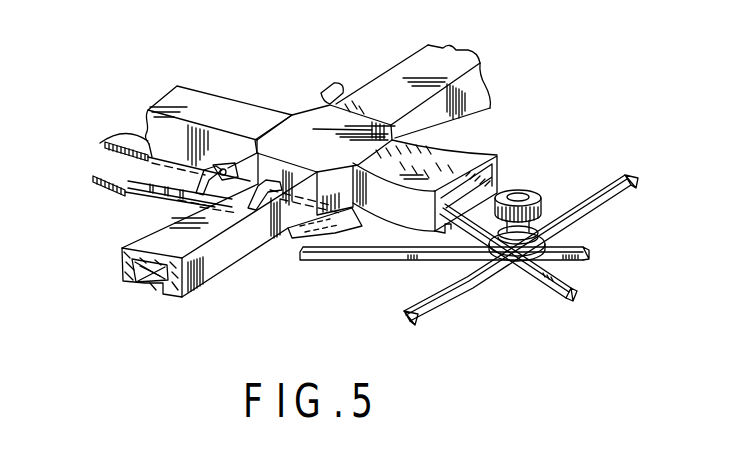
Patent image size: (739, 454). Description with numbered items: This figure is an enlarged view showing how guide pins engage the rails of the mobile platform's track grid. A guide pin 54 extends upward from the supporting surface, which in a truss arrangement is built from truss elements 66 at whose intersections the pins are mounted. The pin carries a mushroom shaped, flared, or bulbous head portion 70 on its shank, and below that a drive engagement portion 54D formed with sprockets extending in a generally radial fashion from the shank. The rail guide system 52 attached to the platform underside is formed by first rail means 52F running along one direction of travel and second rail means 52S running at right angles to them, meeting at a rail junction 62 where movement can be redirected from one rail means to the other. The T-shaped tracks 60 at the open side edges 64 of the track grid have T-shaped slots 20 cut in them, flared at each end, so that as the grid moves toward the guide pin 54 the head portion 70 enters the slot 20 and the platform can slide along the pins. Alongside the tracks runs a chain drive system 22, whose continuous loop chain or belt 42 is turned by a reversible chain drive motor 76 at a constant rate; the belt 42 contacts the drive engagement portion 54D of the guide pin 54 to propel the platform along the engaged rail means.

The T-shaped slot 20 is at (148, 285).
The chain drive system 22 is at (110, 195).
The continuous loop chain or belt 42 is at (104, 143).
The rail guide system 52 is at (368, 74).
The first rail means 52F is at (157, 131).
The second rail means 52S is at (158, 240).
The guide pin 54 is at (531, 178).
The drive engagement portion 54D is at (550, 238).
The T-shaped track 60 is at (215, 100).
The rail junction 62 is at (312, 128).
The open side edge 64 is at (408, 204).
The truss element 66 is at (536, 274).
The head portion 70 is at (538, 198).
The chain drive motor 76 is at (297, 242).